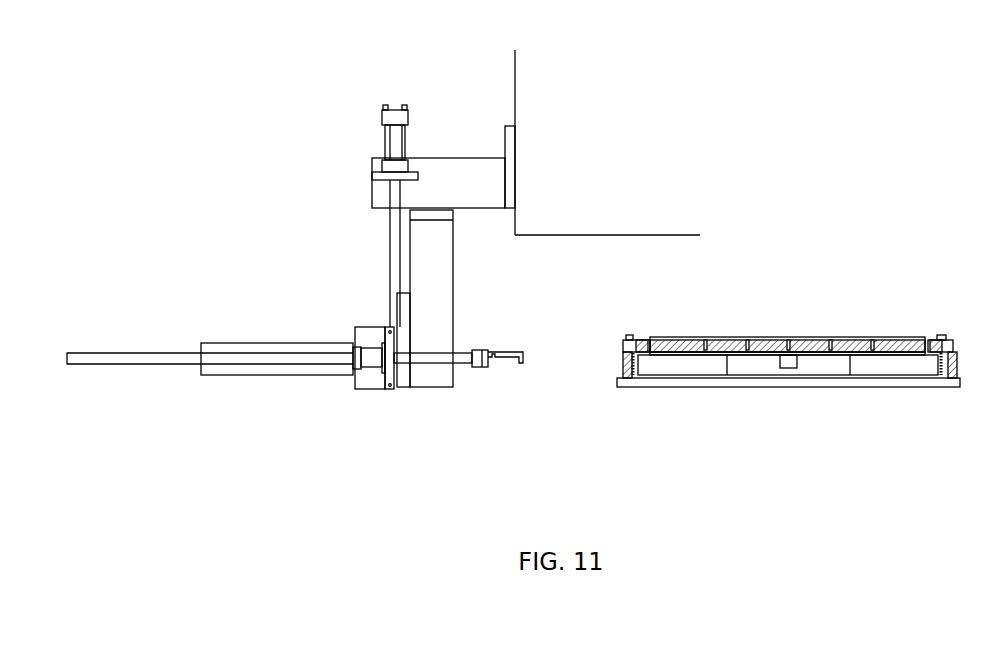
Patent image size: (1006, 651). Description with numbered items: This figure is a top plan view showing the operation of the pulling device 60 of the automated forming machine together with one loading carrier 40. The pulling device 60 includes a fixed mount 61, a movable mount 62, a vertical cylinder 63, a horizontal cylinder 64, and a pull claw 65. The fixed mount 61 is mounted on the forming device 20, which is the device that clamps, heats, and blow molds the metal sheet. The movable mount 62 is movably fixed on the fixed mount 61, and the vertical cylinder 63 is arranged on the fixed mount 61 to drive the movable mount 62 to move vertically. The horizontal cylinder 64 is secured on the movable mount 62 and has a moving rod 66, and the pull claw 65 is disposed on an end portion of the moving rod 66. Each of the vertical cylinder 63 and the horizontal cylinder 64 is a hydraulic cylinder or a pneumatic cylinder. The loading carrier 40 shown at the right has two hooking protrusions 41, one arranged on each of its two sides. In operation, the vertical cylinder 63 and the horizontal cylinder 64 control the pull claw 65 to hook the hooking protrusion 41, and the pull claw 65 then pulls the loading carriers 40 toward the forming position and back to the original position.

The forming device 20 is at (522, 92).
The loading carrier 40 is at (771, 341).
The hooking protrusion 41 is at (623, 360).
The pulling device 60 is at (333, 247).
The fixed mount 61 is at (493, 185).
The movable mount 62 is at (387, 337).
The vertical cylinder 63 is at (390, 137).
The horizontal cylinder 64 is at (268, 347).
The pull claw 65 is at (510, 350).
The moving rod 66 is at (440, 357).